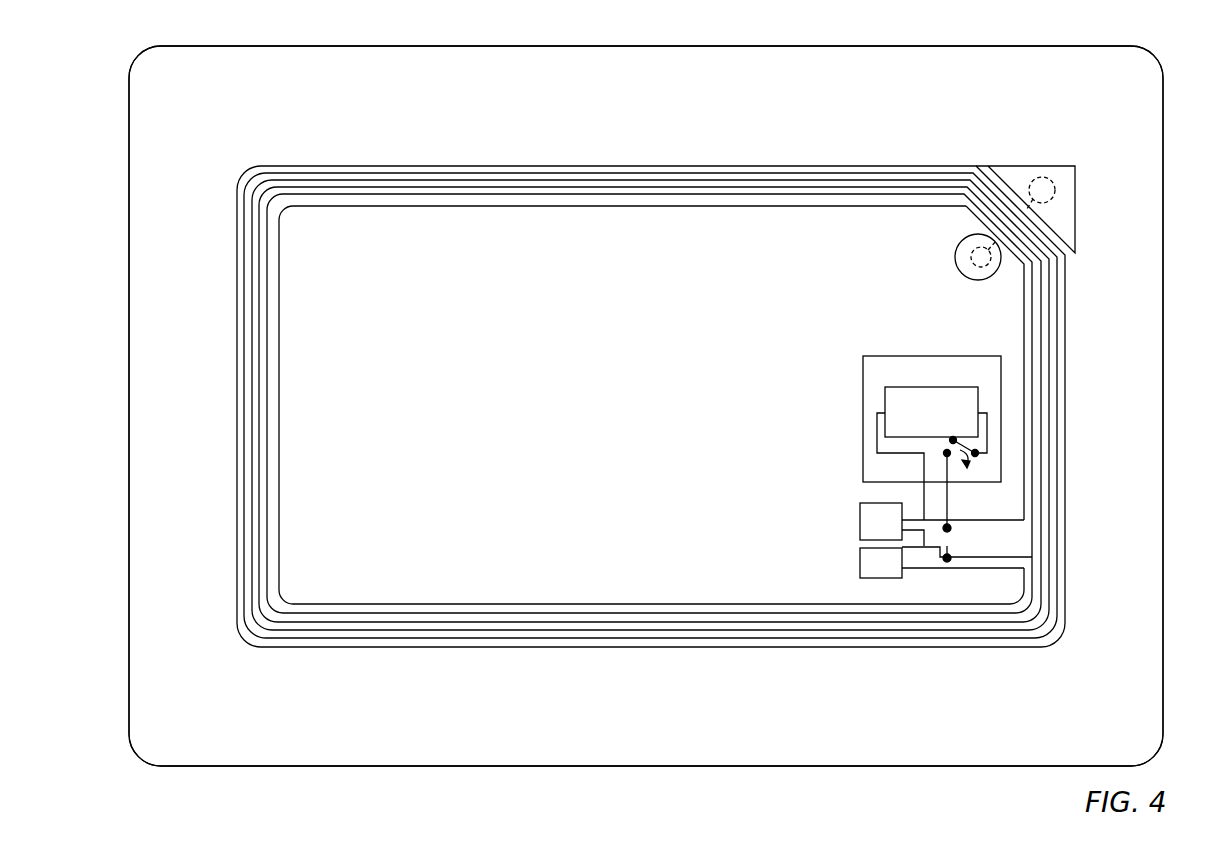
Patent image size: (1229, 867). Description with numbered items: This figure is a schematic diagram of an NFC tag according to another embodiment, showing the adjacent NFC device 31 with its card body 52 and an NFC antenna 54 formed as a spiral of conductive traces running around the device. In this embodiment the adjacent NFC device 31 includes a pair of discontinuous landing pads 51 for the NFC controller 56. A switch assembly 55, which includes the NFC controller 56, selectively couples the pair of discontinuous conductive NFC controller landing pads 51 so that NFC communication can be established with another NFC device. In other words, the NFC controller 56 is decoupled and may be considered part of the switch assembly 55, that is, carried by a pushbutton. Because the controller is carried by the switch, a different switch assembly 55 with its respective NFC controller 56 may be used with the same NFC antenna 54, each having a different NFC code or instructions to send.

The adjacent NFC device 31 is at (758, 42).
The card body 52 is at (933, 75).
The NFC antenna 54 is at (808, 156).
The switch assembly 55 is at (994, 356).
The NFC controller 56 is at (967, 402).
The discontinuous landing pads 51 is at (952, 530).